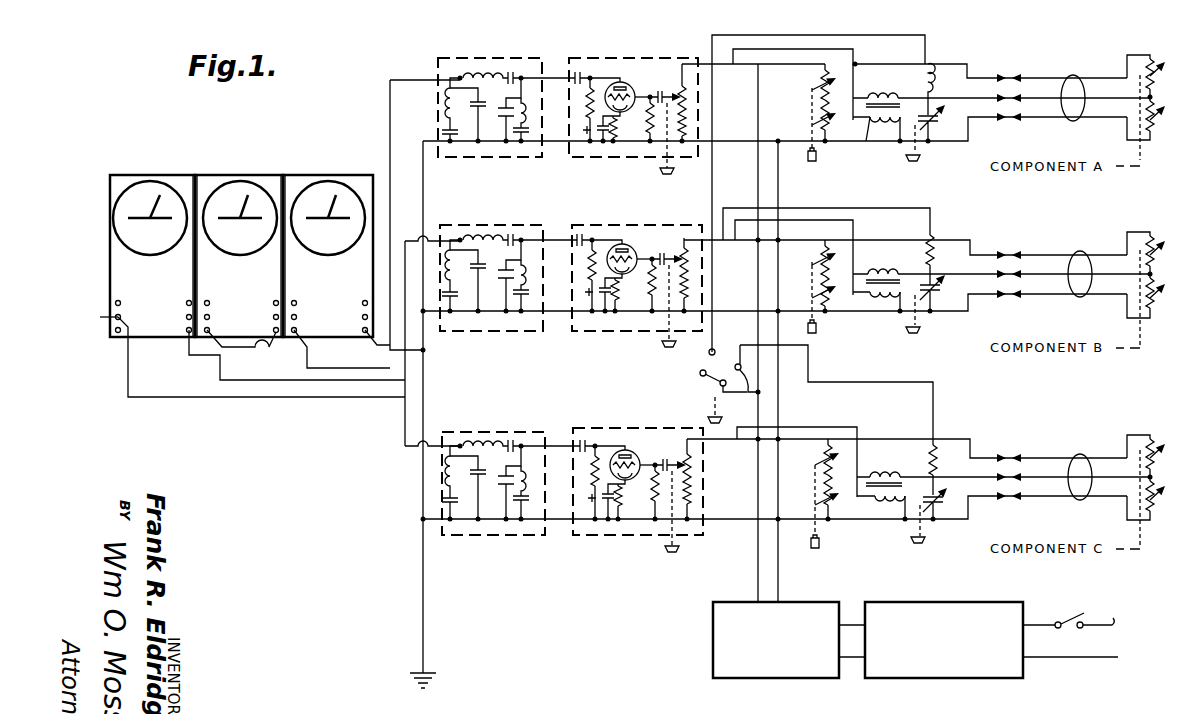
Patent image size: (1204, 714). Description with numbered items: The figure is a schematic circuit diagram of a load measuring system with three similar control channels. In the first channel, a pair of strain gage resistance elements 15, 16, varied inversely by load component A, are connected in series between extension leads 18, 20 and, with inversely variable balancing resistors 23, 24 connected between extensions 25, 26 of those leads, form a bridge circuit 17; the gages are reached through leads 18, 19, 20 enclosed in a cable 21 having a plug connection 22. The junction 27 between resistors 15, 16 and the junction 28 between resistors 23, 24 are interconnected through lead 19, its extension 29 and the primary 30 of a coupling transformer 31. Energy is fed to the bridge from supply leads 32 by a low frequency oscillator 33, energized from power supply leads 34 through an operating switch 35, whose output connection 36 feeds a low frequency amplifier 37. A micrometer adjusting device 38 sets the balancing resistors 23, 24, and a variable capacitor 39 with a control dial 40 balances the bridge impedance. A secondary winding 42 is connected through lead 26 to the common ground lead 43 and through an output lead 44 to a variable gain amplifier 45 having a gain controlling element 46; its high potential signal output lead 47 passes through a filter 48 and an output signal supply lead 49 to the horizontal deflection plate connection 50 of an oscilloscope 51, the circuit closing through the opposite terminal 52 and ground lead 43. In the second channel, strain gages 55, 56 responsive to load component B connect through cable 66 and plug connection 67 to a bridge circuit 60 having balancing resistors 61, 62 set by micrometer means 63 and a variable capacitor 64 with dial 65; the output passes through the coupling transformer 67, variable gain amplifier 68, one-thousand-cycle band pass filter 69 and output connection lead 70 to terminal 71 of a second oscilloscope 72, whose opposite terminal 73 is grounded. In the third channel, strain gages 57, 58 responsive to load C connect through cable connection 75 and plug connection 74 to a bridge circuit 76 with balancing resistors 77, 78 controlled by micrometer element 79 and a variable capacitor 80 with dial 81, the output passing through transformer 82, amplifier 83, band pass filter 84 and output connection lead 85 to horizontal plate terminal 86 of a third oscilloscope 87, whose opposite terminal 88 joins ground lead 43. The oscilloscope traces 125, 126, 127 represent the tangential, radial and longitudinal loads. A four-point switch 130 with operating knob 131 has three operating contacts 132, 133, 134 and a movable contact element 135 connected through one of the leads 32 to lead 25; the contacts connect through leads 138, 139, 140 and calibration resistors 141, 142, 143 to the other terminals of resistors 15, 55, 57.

The variable resistance element 15 is at (1154, 68).
The variable resistance element 16 is at (1154, 126).
The bridge circuit 17 is at (948, 58).
The extension lead 18 is at (1035, 77).
The extension lead 19 is at (1045, 96).
The extension lead 20 is at (1062, 114).
The cable 21 is at (1075, 78).
The plug connection 22 is at (1008, 70).
The inversely variable resistor 23 is at (825, 62).
The inversely variable resistor 24 is at (835, 141).
The lead extension 25 is at (885, 97).
The lead extension 26 is at (791, 143).
The junction 27 is at (1153, 97).
The junction 28 is at (818, 100).
The lead extension 29 is at (968, 80).
The primary 30 is at (870, 96).
The coupling transformer 31 is at (904, 112).
The supply leads 32 is at (778, 190).
The low frequency oscillator 33 is at (991, 602).
The power supply leads 34 is at (1110, 657).
The operating switch 35 is at (1057, 621).
The output connection 36 is at (853, 657).
The low frequency amplifier 37 is at (823, 602).
The micrometer adjusting device 38 is at (820, 165).
The variable capacitor 39 is at (942, 128).
The control dial 40 is at (913, 163).
The secondary winding 42 is at (868, 148).
The common ground lead 43 is at (425, 196).
The output lead 44 is at (785, 48).
The variable gain amplifier 45 is at (668, 58).
The adjustable gain controlling element 46 is at (660, 171).
The high potential signal output lead 47 is at (553, 78).
The filter 48 is at (445, 58).
The output signal supply lead 49 is at (390, 97).
The horizontal deflection plate connection 50 is at (297, 317).
The cathode ray tube or oscilloscope 51 is at (315, 175).
The opposite horizontal deflection plate terminal 52 is at (363, 330).
The variable resistance device 55 is at (1156, 245).
The variable resistance device 56 is at (1155, 307).
The variable resistance device 57 is at (1156, 450).
The variable resistance device 58 is at (1155, 511).
The bridge circuit 60 is at (982, 254).
The balancing resistor element 61 is at (822, 250).
The balancing resistor element 62 is at (835, 300).
The micrometer means 63 is at (813, 335).
The variable capacitor 64 is at (942, 300).
The control dial 65 is at (913, 335).
The cable 66 is at (1070, 254).
The plug connection 67 is at (902, 273).
The variable gain amplifier 68 is at (690, 226).
The 1000 cycle band pass filter 69 is at (543, 226).
The output connection lead 70 is at (292, 380).
The horizontal deflection plate terminal 71 is at (210, 317).
The second cathode ray tube or oscilloscope 72 is at (225, 175).
The opposite horizontal deflection plate terminal 73 is at (266, 349).
The plug connection 74 is at (1012, 504).
The cable connection 75 is at (1080, 457).
The bridge circuit 76 is at (980, 455).
The balancing resistor 77 is at (823, 440).
The balancing resistor 78 is at (836, 505).
The micrometer controlled element 79 is at (822, 547).
The variable capacitor 80 is at (940, 510).
The control dial 81 is at (920, 544).
The transformer 82 is at (904, 477).
The variable gain amplifier 83 is at (683, 430).
The 1000 cycle band pass filter 84 is at (458, 432).
The output connection lead 85 is at (346, 397).
The horizontal plate terminal 86 is at (100, 317).
The third oscilloscope 87 is at (140, 175).
The opposite horizontal plate terminal 88 is at (187, 336).
The trace 125 is at (328, 218).
The trace 126 is at (240, 218).
The trace 127 is at (150, 218).
The ground 130 is at (689, 364).
The operating control handle or knob 131 is at (720, 446).
The operating contact 132 is at (709, 354).
The operating contact 133 is at (739, 364).
The operating contact 134 is at (727, 389).
The movable contact element 135 is at (701, 377).
The lead 138 is at (755, 33).
The lead 139 is at (757, 190).
The lead 140 is at (813, 383).
The calibration resistor 141 is at (932, 70).
The calibration resistor 142 is at (938, 238).
The calibration resistor 143 is at (936, 455).